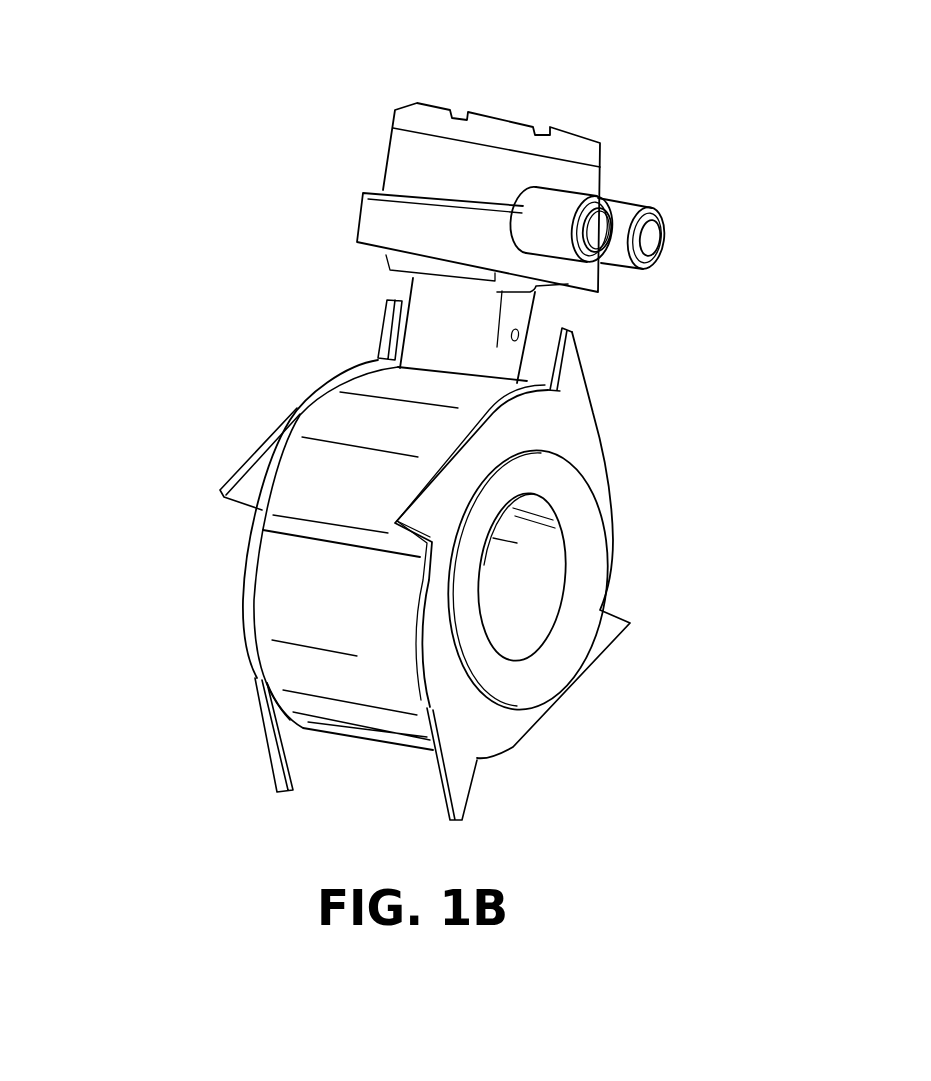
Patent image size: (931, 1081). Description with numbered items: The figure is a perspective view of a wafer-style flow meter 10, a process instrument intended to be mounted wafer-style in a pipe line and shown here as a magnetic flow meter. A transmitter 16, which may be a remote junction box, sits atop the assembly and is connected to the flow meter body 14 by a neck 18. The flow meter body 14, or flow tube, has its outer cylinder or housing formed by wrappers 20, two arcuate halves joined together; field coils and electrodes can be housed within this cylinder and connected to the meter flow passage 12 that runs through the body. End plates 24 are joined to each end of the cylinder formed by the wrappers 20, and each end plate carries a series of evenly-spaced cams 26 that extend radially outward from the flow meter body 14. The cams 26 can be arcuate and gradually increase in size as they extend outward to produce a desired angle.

The wafer-style flow meter 10 is at (230, 198).
The meter flow passage 12 is at (510, 573).
The flow meter body 14 is at (665, 515).
The transmitter 16 is at (512, 118).
The neck 18 is at (518, 305).
The wrappers 20 is at (270, 535).
The end plates 24 is at (577, 433).
The cams 26 is at (388, 323).